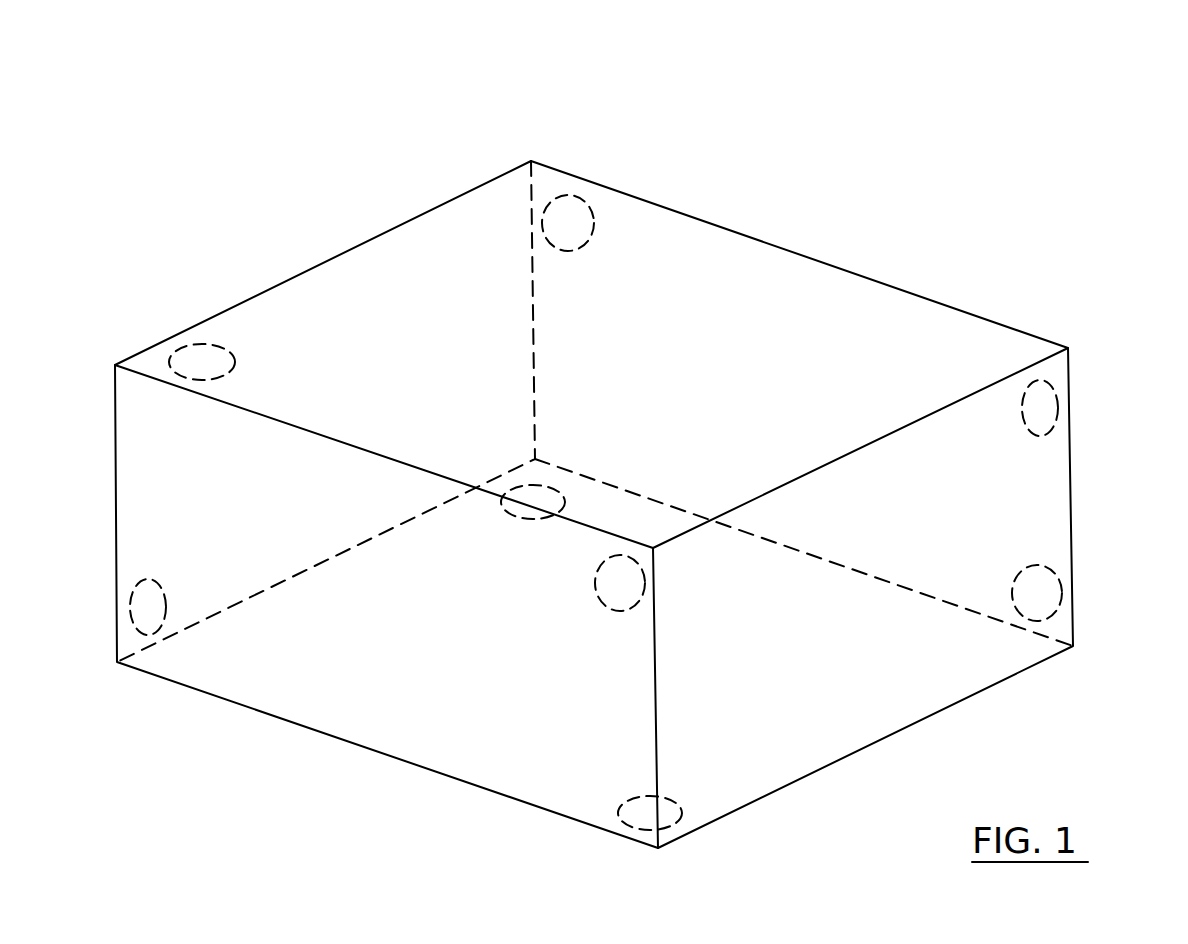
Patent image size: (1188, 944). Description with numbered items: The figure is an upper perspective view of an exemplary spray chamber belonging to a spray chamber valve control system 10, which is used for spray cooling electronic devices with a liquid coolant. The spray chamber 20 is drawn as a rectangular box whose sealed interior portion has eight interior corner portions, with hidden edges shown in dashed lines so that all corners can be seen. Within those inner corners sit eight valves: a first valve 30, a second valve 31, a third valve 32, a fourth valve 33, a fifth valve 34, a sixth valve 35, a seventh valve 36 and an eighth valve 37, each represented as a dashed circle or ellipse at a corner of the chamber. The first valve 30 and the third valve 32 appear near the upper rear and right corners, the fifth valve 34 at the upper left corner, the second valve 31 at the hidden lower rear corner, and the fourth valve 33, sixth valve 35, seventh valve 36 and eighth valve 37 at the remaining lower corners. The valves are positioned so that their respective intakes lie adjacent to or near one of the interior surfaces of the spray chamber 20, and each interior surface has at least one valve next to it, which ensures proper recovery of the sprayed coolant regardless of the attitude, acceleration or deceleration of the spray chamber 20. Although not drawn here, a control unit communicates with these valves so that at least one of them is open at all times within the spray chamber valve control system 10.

The spray chamber valve control system 10 is at (618, 449).
The spray chamber 20 is at (712, 218).
The first valve 30 is at (557, 197).
The second valve 31 is at (533, 470).
The third valve 32 is at (1052, 383).
The fourth valve 33 is at (1060, 587).
The fifth valve 34 is at (185, 347).
The sixth valve 35 is at (140, 625).
The seventh valve 36 is at (605, 607).
The eighth valve 37 is at (682, 810).